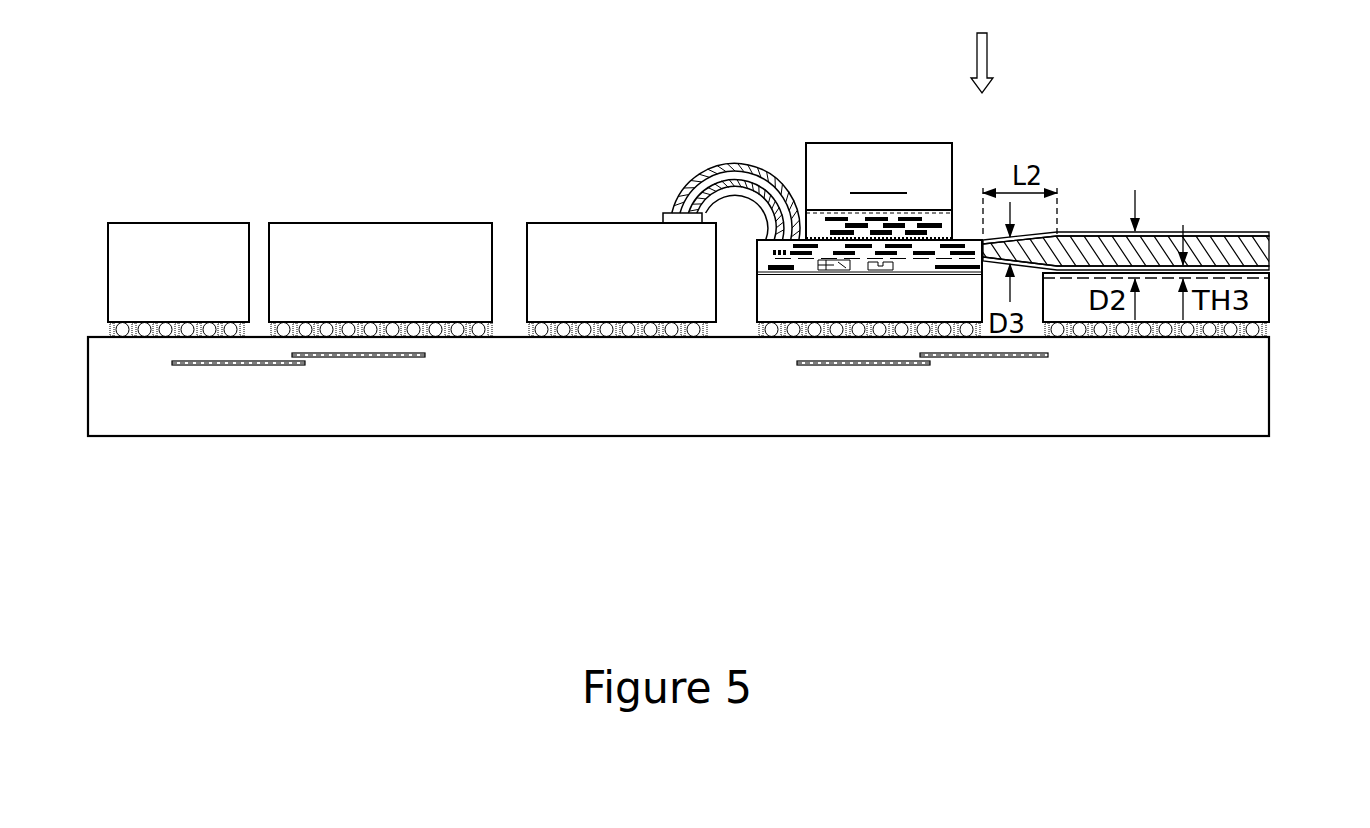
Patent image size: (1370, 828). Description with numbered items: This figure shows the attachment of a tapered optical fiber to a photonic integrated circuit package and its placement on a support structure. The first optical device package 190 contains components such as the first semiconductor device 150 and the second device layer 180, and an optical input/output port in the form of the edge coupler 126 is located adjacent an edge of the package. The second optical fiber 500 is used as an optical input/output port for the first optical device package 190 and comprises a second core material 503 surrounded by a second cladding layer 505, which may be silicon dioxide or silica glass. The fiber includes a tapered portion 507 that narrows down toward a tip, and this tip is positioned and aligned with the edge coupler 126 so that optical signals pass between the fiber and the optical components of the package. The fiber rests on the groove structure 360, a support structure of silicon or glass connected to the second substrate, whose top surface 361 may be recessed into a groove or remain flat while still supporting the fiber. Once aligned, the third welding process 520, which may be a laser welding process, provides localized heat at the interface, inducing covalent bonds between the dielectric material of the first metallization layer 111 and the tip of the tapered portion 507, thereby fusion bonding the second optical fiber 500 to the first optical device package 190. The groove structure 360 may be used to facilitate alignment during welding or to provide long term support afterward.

The first metallization layer 111 is at (754, 265).
The edge coupler 126 is at (986, 247).
The first semiconductor device 150 is at (885, 138).
The second device layer 180 is at (897, 312).
The first optical device package 190 is at (877, 143).
The groove structure 360 is at (1158, 298).
The top surface 361 is at (1256, 268).
The second optical fiber 500 is at (1158, 207).
The second core material 503 is at (1258, 252).
The second cladding layer 505 is at (1226, 232).
The tapered portion 507 is at (1028, 274).
The third welding process 520 is at (1025, 62).